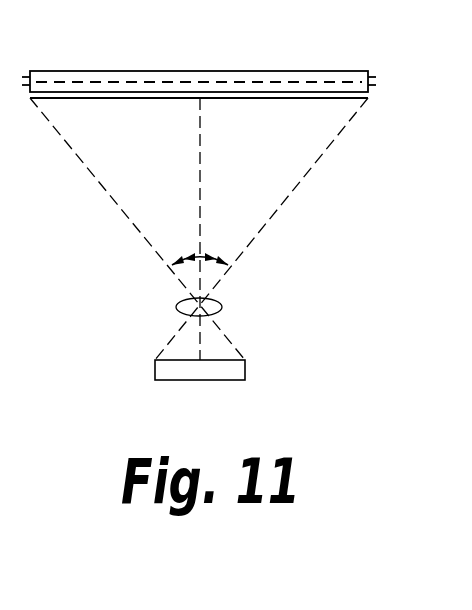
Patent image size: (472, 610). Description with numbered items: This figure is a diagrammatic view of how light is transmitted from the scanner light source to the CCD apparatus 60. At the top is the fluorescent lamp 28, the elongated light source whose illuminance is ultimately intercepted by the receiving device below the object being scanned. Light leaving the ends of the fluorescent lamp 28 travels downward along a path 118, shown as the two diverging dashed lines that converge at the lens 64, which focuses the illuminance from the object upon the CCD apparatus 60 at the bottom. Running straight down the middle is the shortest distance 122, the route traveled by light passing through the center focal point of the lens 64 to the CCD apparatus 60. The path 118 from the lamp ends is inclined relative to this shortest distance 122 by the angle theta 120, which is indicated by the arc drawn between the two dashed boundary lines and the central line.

The fluorescent lamp 28 is at (289, 66).
The path 118 is at (340, 132).
The shortest distance 122 is at (200, 178).
The angle theta 120 is at (228, 248).
The lens 64 is at (226, 299).
The CCD apparatus 60 is at (220, 384).